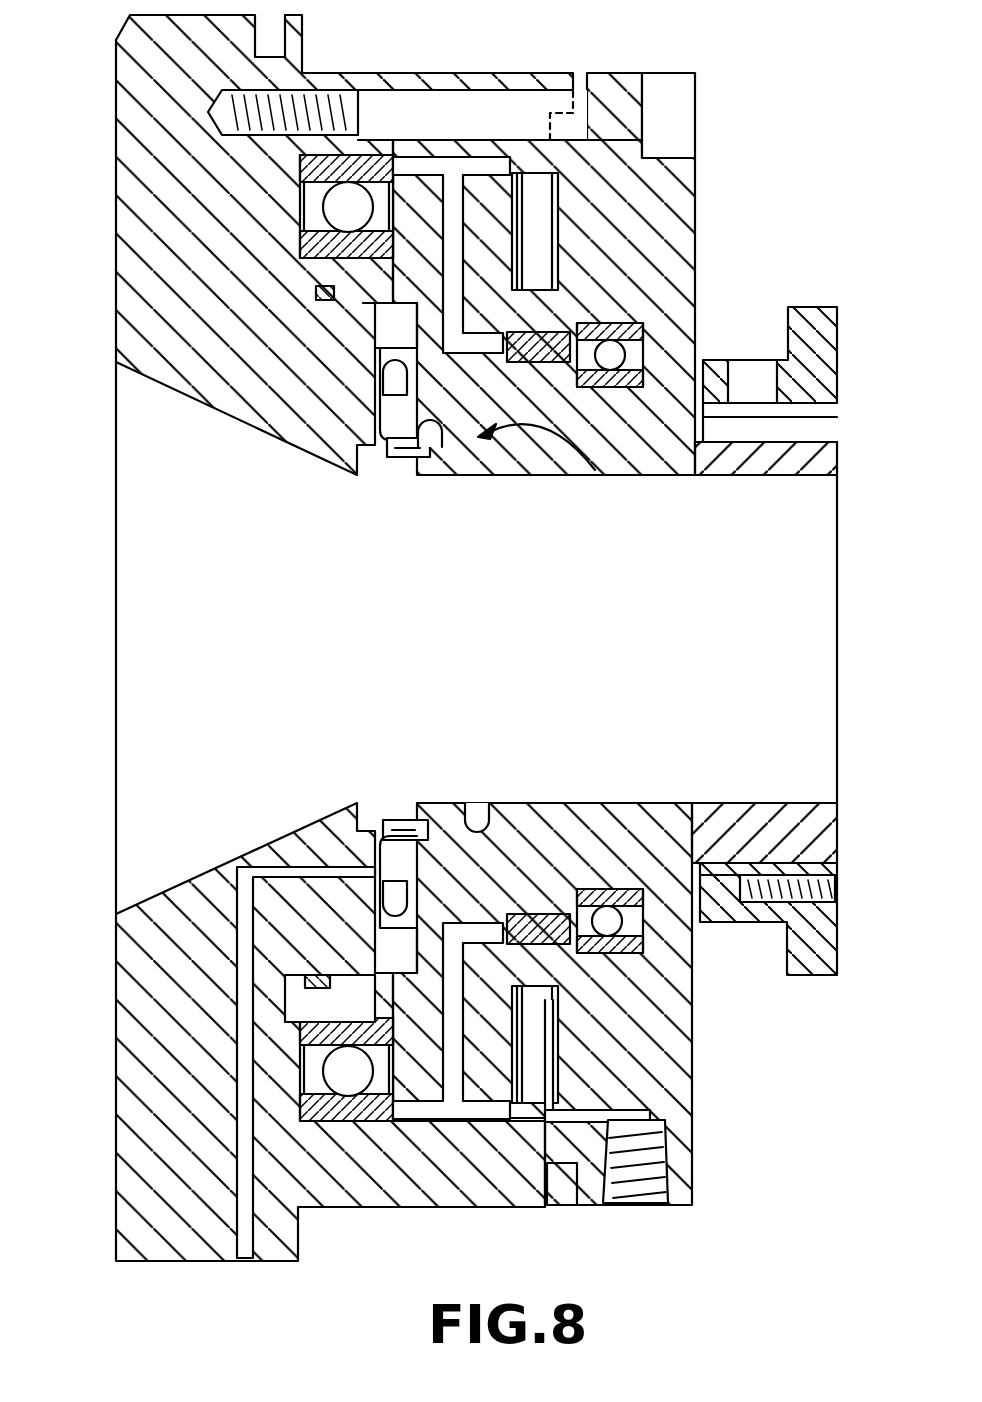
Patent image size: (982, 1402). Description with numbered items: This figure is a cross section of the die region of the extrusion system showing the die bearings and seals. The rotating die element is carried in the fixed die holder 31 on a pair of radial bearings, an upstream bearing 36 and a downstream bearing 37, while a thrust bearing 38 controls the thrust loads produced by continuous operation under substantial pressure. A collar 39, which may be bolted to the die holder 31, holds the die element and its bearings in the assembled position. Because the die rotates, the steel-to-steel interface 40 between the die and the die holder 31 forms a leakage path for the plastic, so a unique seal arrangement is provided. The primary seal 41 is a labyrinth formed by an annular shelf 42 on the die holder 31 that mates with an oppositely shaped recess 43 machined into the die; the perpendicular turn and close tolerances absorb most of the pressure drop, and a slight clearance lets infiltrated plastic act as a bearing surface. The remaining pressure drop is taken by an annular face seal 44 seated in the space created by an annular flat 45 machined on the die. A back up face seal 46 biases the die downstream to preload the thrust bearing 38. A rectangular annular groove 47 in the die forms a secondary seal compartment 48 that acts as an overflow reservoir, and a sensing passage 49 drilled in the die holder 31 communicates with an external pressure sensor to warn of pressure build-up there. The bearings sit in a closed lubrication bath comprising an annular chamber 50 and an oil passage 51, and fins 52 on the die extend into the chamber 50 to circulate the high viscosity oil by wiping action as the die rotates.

The die holder 31 is at (172, 304).
The upstream bearing 36 is at (347, 203).
The downstream bearing 37 is at (607, 352).
The thrust bearing 38 is at (540, 200).
The collar 39 is at (668, 228).
The interface 40 is at (470, 438).
The primary seal 41 is at (595, 470).
The annular shelf 42 is at (440, 822).
The recess 43 is at (480, 812).
The annular face seal 44 is at (415, 455).
The annular flat 45 is at (437, 450).
The back up face seal 46 is at (385, 375).
The rectangular shaped annular groove 47 is at (378, 412).
The secondary seal compartment 48 is at (370, 345).
The sensing passage 49 is at (243, 905).
The annular chamber 50 is at (527, 160).
The oil passage 51 is at (452, 225).
The fins 52 is at (472, 1110).